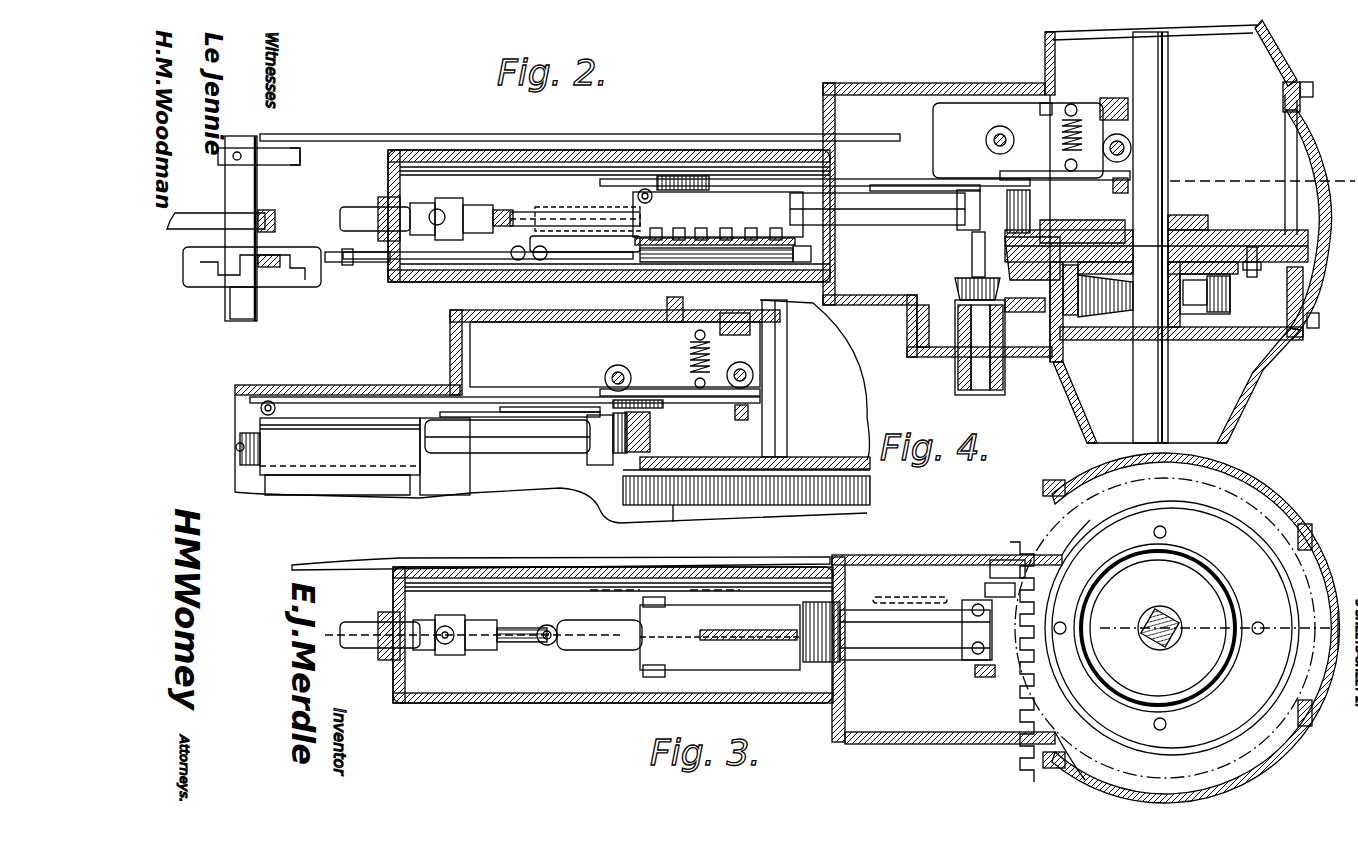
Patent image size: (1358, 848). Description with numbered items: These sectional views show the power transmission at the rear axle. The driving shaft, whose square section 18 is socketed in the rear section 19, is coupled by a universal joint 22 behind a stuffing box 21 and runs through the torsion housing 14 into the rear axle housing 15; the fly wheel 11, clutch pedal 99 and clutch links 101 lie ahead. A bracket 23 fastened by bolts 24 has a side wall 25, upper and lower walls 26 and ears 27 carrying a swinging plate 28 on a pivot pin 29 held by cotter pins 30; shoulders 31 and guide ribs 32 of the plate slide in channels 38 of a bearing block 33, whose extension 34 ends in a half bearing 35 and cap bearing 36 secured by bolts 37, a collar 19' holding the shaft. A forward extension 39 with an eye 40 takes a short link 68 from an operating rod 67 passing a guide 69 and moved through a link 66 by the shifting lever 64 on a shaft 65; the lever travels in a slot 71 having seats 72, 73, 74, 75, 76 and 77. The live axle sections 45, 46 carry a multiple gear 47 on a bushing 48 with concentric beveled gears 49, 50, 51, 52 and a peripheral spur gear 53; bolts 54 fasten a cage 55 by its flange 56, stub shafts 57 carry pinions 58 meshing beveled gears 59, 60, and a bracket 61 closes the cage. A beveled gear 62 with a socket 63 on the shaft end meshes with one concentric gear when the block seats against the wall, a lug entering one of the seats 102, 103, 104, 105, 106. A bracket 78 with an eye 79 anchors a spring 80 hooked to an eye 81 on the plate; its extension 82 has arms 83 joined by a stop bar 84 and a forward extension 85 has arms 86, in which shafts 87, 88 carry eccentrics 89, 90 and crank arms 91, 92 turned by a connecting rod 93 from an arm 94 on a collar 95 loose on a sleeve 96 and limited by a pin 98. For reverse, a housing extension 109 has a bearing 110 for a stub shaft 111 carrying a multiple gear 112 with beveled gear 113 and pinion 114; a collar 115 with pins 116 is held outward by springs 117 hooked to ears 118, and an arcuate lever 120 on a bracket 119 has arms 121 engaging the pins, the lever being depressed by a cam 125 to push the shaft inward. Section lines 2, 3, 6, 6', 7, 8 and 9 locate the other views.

In FIG. 3, the section line 2— 2 is at (827, 684).
In FIG. 2, the section line 3— 3 is at (363, 258).
In FIG. 3, the section line 3— 3 is at (1342, 640).
In FIG. 2, the section line 6— 6 is at (949, 164).
In FIG. 2, the section line 6-6 6' is at (968, 422).
In FIG. 2, the section line 7— 7 is at (928, 160).
In FIG. 2, the section line 8— 8 is at (728, 290).
In FIG. 3, the section line 9— 9 is at (656, 591).
In FIG. 2, the fly wheel 11 is at (370, 205).
In FIG. 3, the fly wheel 11 is at (380, 621).
In FIG. 2, the torsion housing 14 is at (518, 152).
In FIG. 4, the torsion housing 14 is at (362, 385).
In FIG. 3, the torsion housing 14 is at (620, 695).
In FIG. 2, the rear axle casing or housing 15 is at (1265, 40).
In FIG. 4, the rear axle casing or housing 15 is at (857, 435).
In FIG. 3, the rear axle casing or housing 15 is at (1258, 486).
In FIG. 2, the shaft section 18 is at (512, 212).
In FIG. 3, the shaft section 18 is at (512, 628).
In FIG. 2, the rear driving shaft section 19 is at (866, 237).
In FIG. 4, the rear driving shaft section 19 is at (507, 449).
In FIG. 3, the rear driving shaft section 19 is at (915, 649).
In FIG. 2, the collar 19' is at (587, 201).
In FIG. 4, the collar 19' is at (213, 453).
In FIG. 2, the stuffing box 21 is at (360, 200).
In FIG. 4, the stuffing box 21 is at (300, 405).
In FIG. 3, the stuffing box 21 is at (385, 660).
In FIG. 2, the second universal joint 22 is at (450, 205).
In FIG. 3, the second universal joint 22 is at (450, 618).
In FIG. 2, the bracket 23 is at (655, 270).
In FIG. 4, the bracket 23 is at (352, 480).
In FIG. 3, the bracket 23 is at (728, 650).
In FIG. 2, the bolts 24 is at (599, 298).
In FIG. 2, the side wall 25 is at (795, 242).
In FIG. 3, the side wall 25 is at (790, 662).
In FIG. 2, the upper and lower walls 26 is at (705, 190).
In FIG. 4, the upper and lower walls 26 is at (340, 446).
In FIG. 2, the perforated ears 27 is at (650, 190).
In FIG. 3, the perforated ears 27 is at (640, 602).
In FIG. 2, the plate 28 is at (867, 180).
In FIG. 4, the plate 28 is at (395, 397).
In FIG. 2, the pivot pin 29 is at (638, 196).
In FIG. 4, the pivot pin 29 is at (275, 389).
In FIG. 3, the pivot pin 29 is at (655, 680).
In FIG. 4, the cotter pins 30 is at (262, 423).
In FIG. 3, the cotter pins 30 is at (670, 670).
In FIG. 2, the shoulders 31 is at (905, 185).
In FIG. 4, the shoulders 31 is at (510, 407).
In FIG. 3, the shoulders 31 is at (908, 612).
In FIG. 3, the guide ribs 32 is at (903, 591).
In FIG. 4, the bearing block 33 is at (445, 456).
In FIG. 3, the bearing block 33 is at (795, 620).
In FIG. 2, the rearward extension 34 is at (825, 190).
In FIG. 3, the rearward extension 34 is at (925, 650).
In FIG. 2, the half bearing 35 is at (967, 210).
In FIG. 4, the half bearing 35 is at (595, 445).
In FIG. 2, the cap bearing 36 is at (929, 205).
In FIG. 2, the bolts 37 is at (955, 185).
In FIG. 4, the bolts 37 is at (610, 450).
In FIG. 3, the bolts 37 is at (970, 605).
In FIG. 4, the grooves or channels 38 is at (475, 412).
In FIG. 2, the forward extension 39 is at (491, 249).
In FIG. 3, the forward extension 39 is at (595, 650).
In FIG. 2, the eye 40 is at (547, 253).
In FIG. 3, the eye 40 is at (545, 645).
In FIG. 2, the live axle section 45 is at (1160, 76).
In FIG. 4, the live axle section 45 is at (785, 415).
In FIG. 2, the live axle section 46 is at (1168, 405).
In FIG. 3, the live axle section 46 is at (1168, 620).
In FIG. 2, the multiple gear 47 is at (1215, 240).
In FIG. 4, the multiple gear 47 is at (778, 505).
In FIG. 3, the multiple gear 47 is at (1220, 700).
In FIG. 2, the bushing 48 is at (1188, 212).
In FIG. 2, the beveled gear 49 is at (1295, 225).
In FIG. 4, the beveled gear 49 is at (822, 457).
In FIG. 2, the beveled gear 50 is at (1255, 240).
In FIG. 2, the beveled gear 51 is at (1238, 232).
In FIG. 2, the beveled gear 52 is at (1100, 233).
In FIG. 2, the spur gear 53 is at (1262, 292).
In FIG. 4, the spur gear 53 is at (625, 485).
In FIG. 3, the spur gear 53 is at (1106, 741).
In FIG. 2, the bolts 54 is at (1262, 287).
In FIG. 3, the bolts 54 is at (1215, 629).
In FIG. 2, the cylindrical cage 55 is at (1269, 321).
In FIG. 4, the cylindrical cage 55 is at (732, 505).
In FIG. 3, the cylindrical cage 55 is at (1218, 575).
In FIG. 2, the annular flange 56 is at (1329, 305).
In FIG. 3, the annular flange 56 is at (1245, 570).
In FIG. 2, the stub shafts 57 is at (1262, 355).
In FIG. 2, the beveled pinions 58 is at (1235, 325).
In FIG. 2, the beveled gear 59 is at (1095, 330).
In FIG. 2, the beveled gear 60 is at (1200, 345).
In FIG. 3, the beveled gear 60 is at (1150, 616).
In FIG. 2, the bearing forming bracket 61 is at (1130, 340).
In FIG. 4, the beveled gear 62 is at (655, 433).
In FIG. 2, the socket 63 is at (1007, 211).
In FIG. 4, the socket 63 is at (617, 444).
In FIG. 3, the socket 63 is at (1054, 628).
In FIG. 2, the gear shifting lever 64 is at (275, 275).
In FIG. 2, the shaft 65 is at (250, 322).
In FIG. 2, the link 66 is at (345, 265).
In FIG. 2, the operating rod 67 is at (510, 260).
In FIG. 2, the short link 68 is at (540, 262).
In FIG. 2, the guide 69 is at (440, 262).
In FIG. 2, the slot 71 is at (300, 275).
In FIG. 2, the seat 72 is at (285, 288).
In FIG. 2, the seat 73 is at (268, 258).
In FIG. 2, the seat 74 is at (242, 303).
In FIG. 2, the seat 75 is at (225, 250).
In FIG. 2, the seat 76 is at (210, 275).
In FIG. 2, the seat 77 is at (300, 262).
In FIG. 2, the bracket 78 is at (990, 100).
In FIG. 4, the bracket 78 is at (654, 349).
In FIG. 2, the eye 79 is at (1075, 110).
In FIG. 4, the eye 79 is at (696, 340).
In FIG. 2, the helical spring 80 is at (1038, 115).
In FIG. 4, the helical spring 80 is at (745, 345).
In FIG. 2, the eye 81 is at (1041, 153).
In FIG. 2, the extension 82 is at (1130, 118).
In FIG. 4, the extension 82 is at (752, 322).
In FIG. 2, the arms 83 is at (1128, 142).
In FIG. 4, the arms 83 is at (752, 343).
In FIG. 2, the stop bar 84 is at (1130, 185).
In FIG. 4, the stop bar 84 is at (741, 420).
In FIG. 2, the extension 85 is at (985, 118).
In FIG. 4, the extension 85 is at (600, 340).
In FIG. 2, the arms 86 is at (1014, 117).
In FIG. 4, the arms 86 is at (634, 377).
In FIG. 3, the arms 86 is at (988, 575).
In FIG. 4, the vertical shaft 87 is at (700, 380).
In FIG. 2, the shaft 88 is at (985, 140).
In FIG. 4, the shaft 88 is at (600, 390).
In FIG. 3, the shaft 88 is at (995, 562).
In FIG. 2, the eccentric 89 is at (1110, 180).
In FIG. 4, the eccentric 89 is at (752, 360).
In FIG. 2, the eccentric 90 is at (1012, 135).
In FIG. 4, the eccentric 90 is at (605, 366).
In FIG. 3, the eccentric 90 is at (1010, 585).
In FIG. 2, the crank arm 91 is at (238, 162).
In FIG. 3, the crank arm 92 is at (1000, 566).
In FIG. 2, the connecting rod 93 is at (748, 130).
In FIG. 4, the connecting rod 93 is at (643, 539).
In FIG. 3, the connecting rod 93 is at (642, 557).
In FIG. 2, the arm 94 is at (290, 150).
In FIG. 2, the collar 95 is at (222, 156).
In FIG. 2, the sleeve 96 is at (258, 188).
In FIG. 2, the pin 98 is at (258, 165).
In FIG. 2, the clutch pedal 99 is at (238, 230).
In FIG. 2, the links 101 is at (765, 226).
In FIG. 2, the seat 102 is at (725, 253).
In FIG. 2, the seat 103 is at (723, 226).
In FIG. 2, the seat 104 is at (720, 206).
In FIG. 2, the seat 105 is at (669, 226).
In FIG. 2, the seat 106 is at (655, 206).
In FIG. 2, the lateral extension 109 is at (918, 318).
In FIG. 2, the bearing 110 is at (1003, 395).
In FIG. 2, the stub shaft 111 is at (975, 395).
In FIG. 2, the multiple gear 112 is at (958, 288).
In FIG. 2, the beveled gear 113 is at (1022, 289).
In FIG. 2, the spur gear or pinion 114 is at (1025, 306).
In FIG. 2, the collar 115 is at (1000, 370).
In FIG. 2, the pins 116 is at (1028, 323).
In FIG. 2, the helical springs 117 is at (1053, 323).
In FIG. 2, the perforated ears 118 is at (925, 355).
In FIG. 2, the bracket 119 is at (972, 260).
In FIG. 2, the arcuate lever 120 is at (970, 243).
In FIG. 3, the arcuate lever 120 is at (980, 678).
In FIG. 2, the arms 121 is at (960, 370).
In FIG. 2, the cam 125 is at (1040, 232).
In FIG. 4, the cam 125 is at (662, 415).
In FIG. 3, the cam 125 is at (1035, 690).